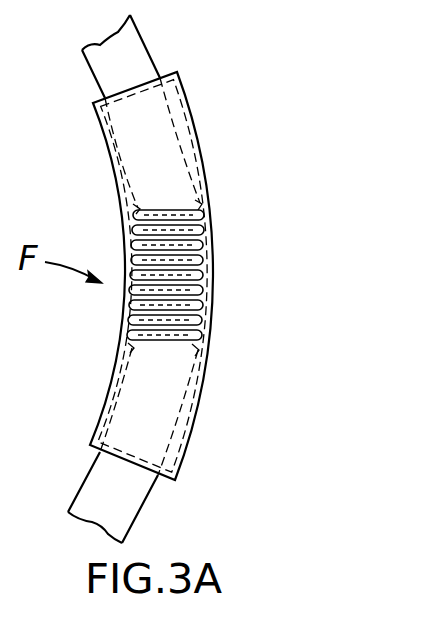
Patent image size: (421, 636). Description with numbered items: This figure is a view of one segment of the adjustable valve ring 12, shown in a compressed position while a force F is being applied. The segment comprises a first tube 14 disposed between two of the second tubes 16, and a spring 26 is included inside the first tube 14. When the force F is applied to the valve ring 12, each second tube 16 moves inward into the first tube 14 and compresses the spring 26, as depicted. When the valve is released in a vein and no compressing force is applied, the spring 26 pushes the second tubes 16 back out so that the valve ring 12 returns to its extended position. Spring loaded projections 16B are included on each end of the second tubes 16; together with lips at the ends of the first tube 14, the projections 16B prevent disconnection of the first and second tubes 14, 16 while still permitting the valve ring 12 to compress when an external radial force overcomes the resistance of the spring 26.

The adjustable valve ring 12 is at (228, 104).
The first tube 14 is at (195, 418).
The second tube 16 is at (143, 33).
The spring loaded projection 16B is at (217, 193).
The spring 26 is at (210, 262).